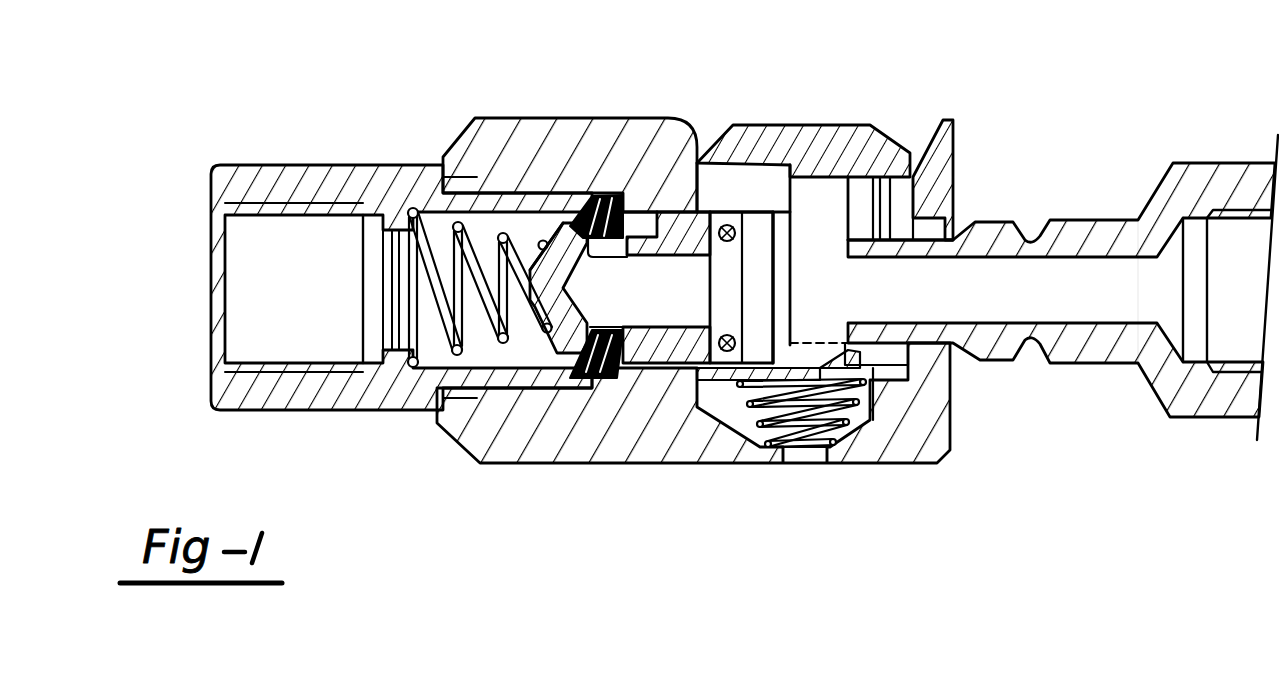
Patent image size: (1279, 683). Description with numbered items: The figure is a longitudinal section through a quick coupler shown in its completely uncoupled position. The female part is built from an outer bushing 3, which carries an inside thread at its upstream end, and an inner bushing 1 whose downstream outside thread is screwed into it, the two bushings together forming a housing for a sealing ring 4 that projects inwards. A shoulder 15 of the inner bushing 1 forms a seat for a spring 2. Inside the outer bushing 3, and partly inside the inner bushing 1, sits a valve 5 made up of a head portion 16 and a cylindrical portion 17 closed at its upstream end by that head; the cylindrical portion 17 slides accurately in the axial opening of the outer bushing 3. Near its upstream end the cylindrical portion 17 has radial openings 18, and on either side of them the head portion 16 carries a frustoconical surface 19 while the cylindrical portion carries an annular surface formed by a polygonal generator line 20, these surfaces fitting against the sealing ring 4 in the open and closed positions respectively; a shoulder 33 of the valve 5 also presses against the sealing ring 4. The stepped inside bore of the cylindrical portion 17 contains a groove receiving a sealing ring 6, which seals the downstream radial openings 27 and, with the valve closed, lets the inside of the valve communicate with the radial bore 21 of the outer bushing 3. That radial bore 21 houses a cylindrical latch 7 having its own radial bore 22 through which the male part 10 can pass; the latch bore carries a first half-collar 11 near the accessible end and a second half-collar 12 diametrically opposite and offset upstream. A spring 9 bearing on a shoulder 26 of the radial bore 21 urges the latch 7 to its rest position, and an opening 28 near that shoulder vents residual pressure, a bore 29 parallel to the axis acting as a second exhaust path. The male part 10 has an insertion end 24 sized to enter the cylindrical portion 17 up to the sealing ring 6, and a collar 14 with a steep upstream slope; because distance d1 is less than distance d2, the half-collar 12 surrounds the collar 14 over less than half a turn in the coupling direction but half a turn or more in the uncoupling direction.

The inner bushing 1 is at (280, 168).
The spring 2 is at (413, 208).
The outer bushing 3 is at (452, 150).
The sealing ring 4 is at (560, 222).
The valve 5 is at (668, 212).
The sealing ring 6 is at (727, 224).
The latch 7 is at (816, 125).
The spring 9 is at (857, 422).
The male part 10 is at (1066, 134).
The first half-collar 11 is at (904, 156).
The second half-collar 12 is at (885, 382).
The collar 14 is at (988, 240).
The shoulder 15 is at (407, 362).
The head portion 16 is at (532, 300).
The cylindrical portion 17 is at (662, 400).
The radial openings 18 is at (597, 352).
The frustoconical surface 19 is at (595, 200).
The polygonal generator line 20 is at (620, 198).
The radial bore 21 is at (692, 200).
The radial bore 22 is at (775, 188).
The insertion end 24 is at (857, 200).
The shoulder 26 is at (845, 432).
The radial openings 27 is at (757, 385).
The opening 28 is at (793, 460).
The bore 29 is at (942, 412).
The shoulder 33 is at (640, 210).
The distance d1 is at (885, 300).
The distance d2 is at (795, 378).